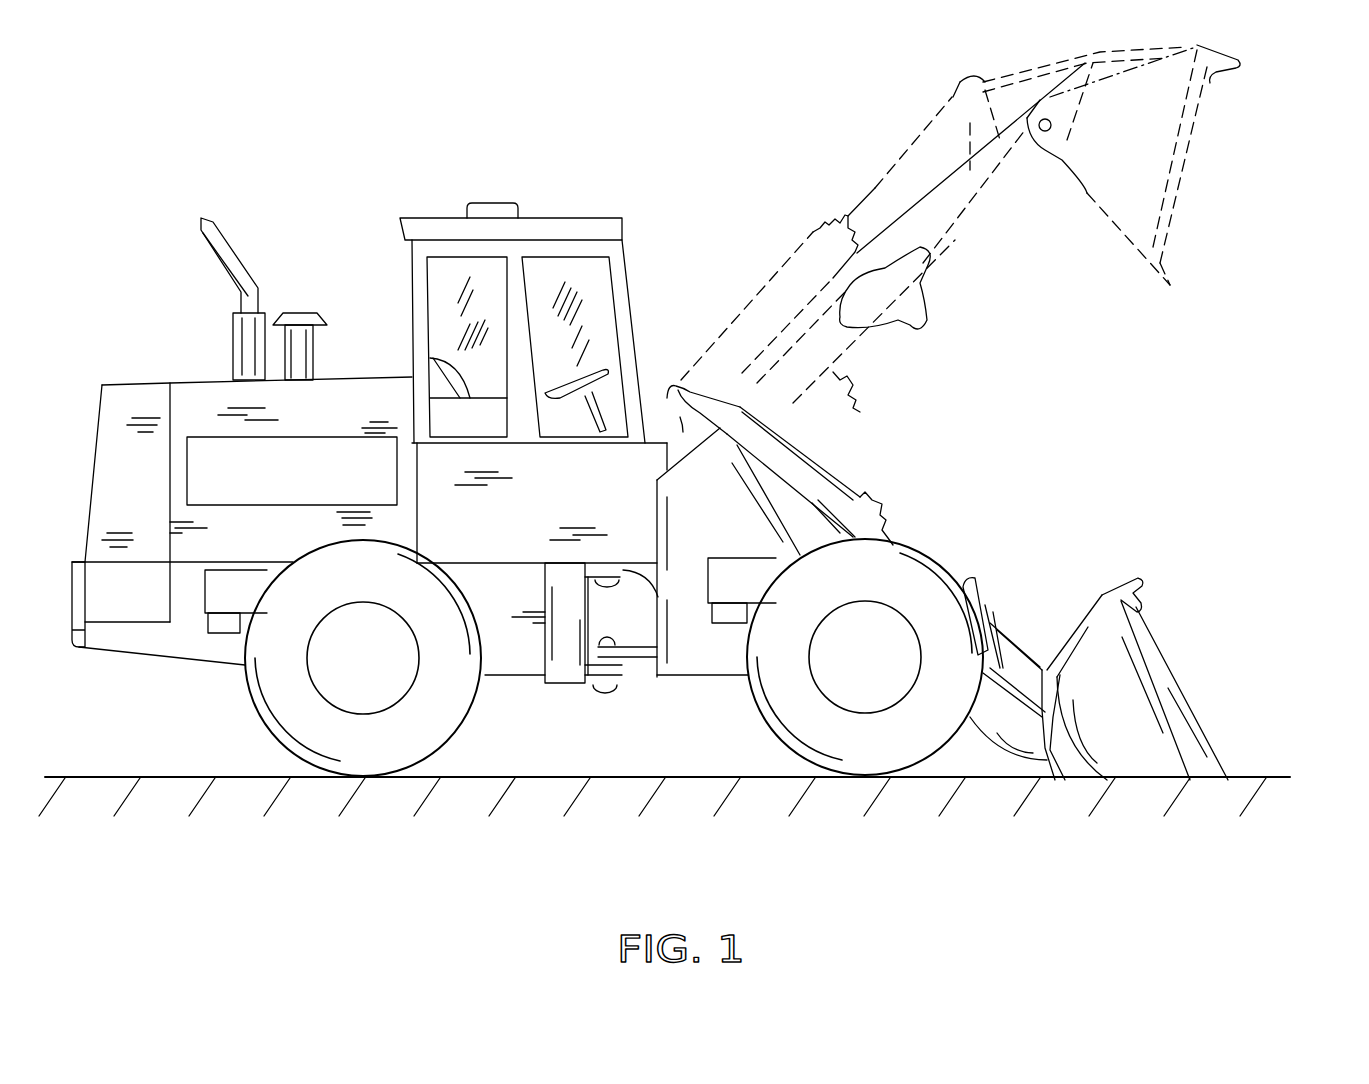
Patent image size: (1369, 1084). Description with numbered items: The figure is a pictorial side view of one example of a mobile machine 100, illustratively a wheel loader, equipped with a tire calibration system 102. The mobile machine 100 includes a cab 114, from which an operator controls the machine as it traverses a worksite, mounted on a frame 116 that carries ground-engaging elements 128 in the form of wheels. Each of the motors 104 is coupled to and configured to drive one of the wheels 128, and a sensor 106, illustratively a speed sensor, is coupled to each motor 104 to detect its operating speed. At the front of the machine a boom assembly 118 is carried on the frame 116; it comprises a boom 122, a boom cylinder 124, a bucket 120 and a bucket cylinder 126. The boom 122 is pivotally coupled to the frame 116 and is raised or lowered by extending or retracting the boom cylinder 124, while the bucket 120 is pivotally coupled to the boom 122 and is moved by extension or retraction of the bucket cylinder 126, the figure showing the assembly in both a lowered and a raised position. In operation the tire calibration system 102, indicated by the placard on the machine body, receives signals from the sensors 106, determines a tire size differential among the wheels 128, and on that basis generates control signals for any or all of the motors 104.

The mobile machine 100 is at (120, 215).
The tire calibration system 102 is at (347, 497).
The motor 104 is at (208, 600).
The sensor 106 is at (223, 635).
The cab 114 is at (633, 329).
The frame 116 is at (513, 650).
The boom assembly 118 is at (1277, 367).
The bucket 120 is at (1133, 733).
The boom 122 is at (968, 208).
The boom cylinder 124 is at (837, 407).
The bucket cylinder 126 is at (850, 510).
The ground-engaging element 128 is at (363, 745).